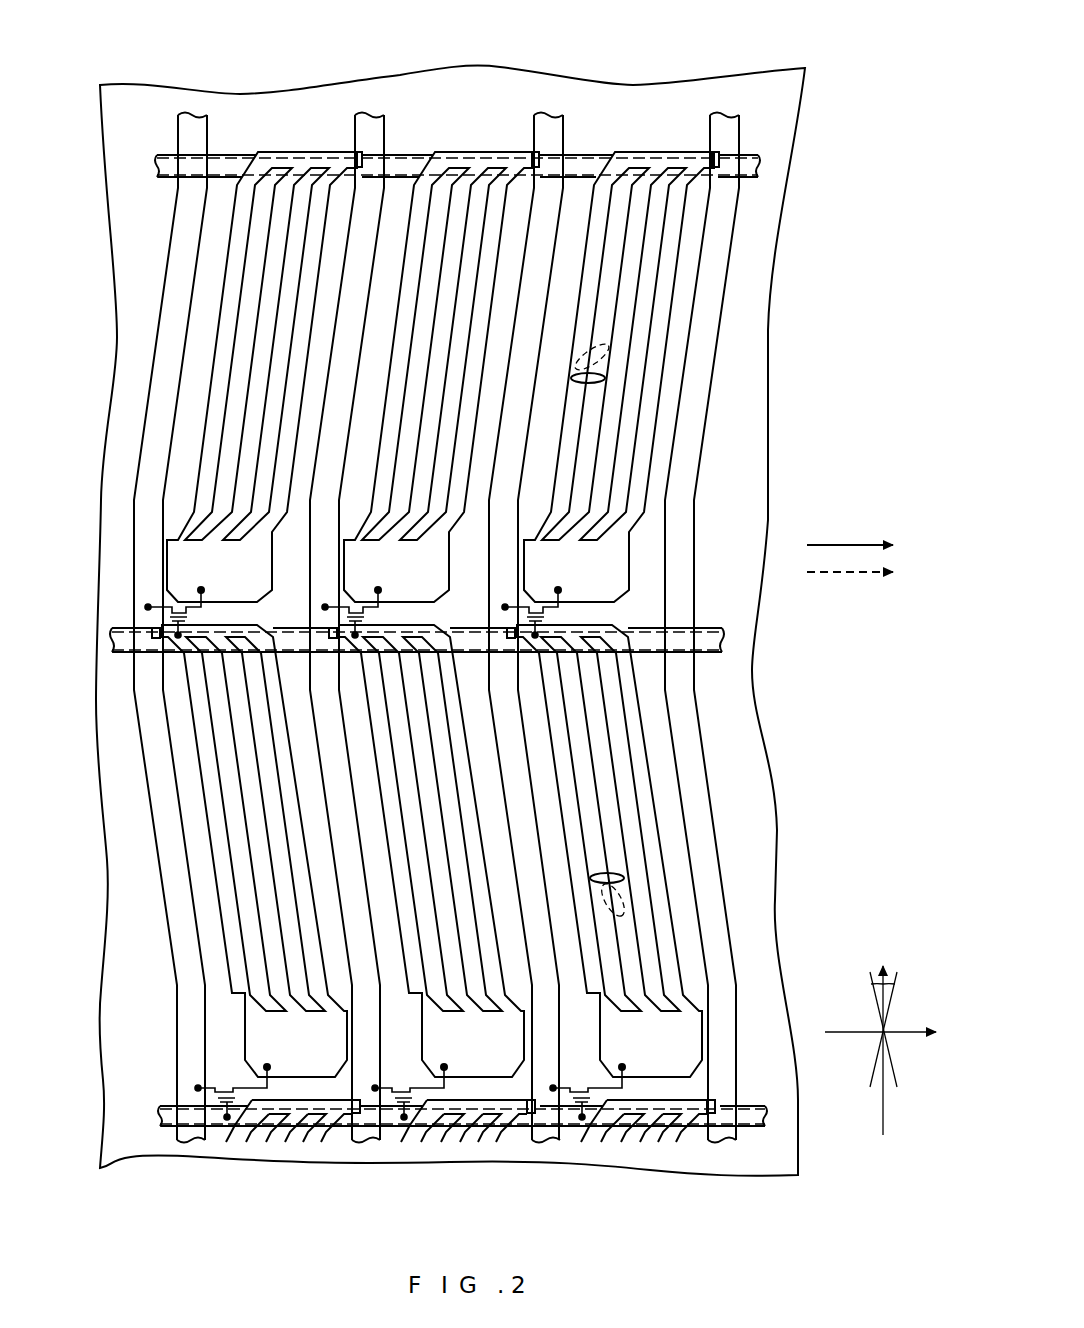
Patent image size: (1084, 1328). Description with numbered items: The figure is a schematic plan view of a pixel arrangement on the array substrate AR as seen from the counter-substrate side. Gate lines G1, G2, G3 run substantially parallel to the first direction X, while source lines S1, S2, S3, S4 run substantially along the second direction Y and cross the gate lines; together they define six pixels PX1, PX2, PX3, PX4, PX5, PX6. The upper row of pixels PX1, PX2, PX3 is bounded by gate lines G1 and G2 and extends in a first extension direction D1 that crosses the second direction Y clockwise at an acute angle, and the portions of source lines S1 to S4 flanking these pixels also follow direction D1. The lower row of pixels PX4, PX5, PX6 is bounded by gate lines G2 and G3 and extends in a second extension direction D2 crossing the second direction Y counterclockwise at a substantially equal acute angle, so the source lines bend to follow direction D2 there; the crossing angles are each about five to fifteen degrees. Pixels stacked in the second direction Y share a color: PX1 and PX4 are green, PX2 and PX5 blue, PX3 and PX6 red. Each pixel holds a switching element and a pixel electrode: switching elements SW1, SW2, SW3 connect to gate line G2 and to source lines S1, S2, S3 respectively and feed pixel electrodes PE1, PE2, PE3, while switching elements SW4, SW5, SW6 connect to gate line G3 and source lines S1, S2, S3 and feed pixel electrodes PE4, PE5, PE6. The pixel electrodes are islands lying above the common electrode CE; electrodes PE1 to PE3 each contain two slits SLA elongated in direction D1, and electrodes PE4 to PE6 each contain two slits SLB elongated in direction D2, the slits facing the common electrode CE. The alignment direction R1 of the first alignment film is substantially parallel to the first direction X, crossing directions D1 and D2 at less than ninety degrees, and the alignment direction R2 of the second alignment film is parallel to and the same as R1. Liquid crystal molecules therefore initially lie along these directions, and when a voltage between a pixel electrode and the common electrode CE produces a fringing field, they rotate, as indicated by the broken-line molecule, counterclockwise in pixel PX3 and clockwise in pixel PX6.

The pixel PX1 is at (201, 340).
The pixel PX2 is at (289, 331).
The pixel PX3 is at (629, 340).
The pixel PX4 is at (232, 920).
The pixel PX5 is at (403, 920).
The pixel PX6 is at (604, 920).
The pixel electrode PE1 is at (205, 430).
The pixel electrode PE2 is at (375, 490).
The pixel electrode PE3 is at (610, 558).
The pixel electrode PE4 is at (257, 1048).
The pixel electrode PE5 is at (434, 1048).
The pixel electrode PE6 is at (612, 1042).
The switching element SW1 is at (160, 619).
The switching element SW2 is at (335, 619).
The switching element SW3 is at (562, 613).
The switching element SW4 is at (212, 1100).
The switching element SW5 is at (387, 1097).
The switching element SW6 is at (583, 1078).
The source line S1 is at (188, 1141).
The source line S2 is at (366, 1141).
The source line S3 is at (548, 1141).
The source line S4 is at (725, 1141).
The gate line G1 is at (758, 165).
The gate line G2 is at (722, 640).
The gate line G3 is at (765, 1116).
The slit SLA is at (252, 305).
The slit SLB is at (270, 800).
The common electrode CE is at (768, 425).
The array substrate AR is at (855, 190).
The alignment direction of the first alignment film R1 is at (847, 543).
The alignment direction of the second alignment film R2 is at (847, 573).
The first extension direction D1 is at (903, 1021).
The second extension direction D2 is at (867, 1021).
The first direction X is at (893, 1032).
The second direction Y is at (884, 1033).